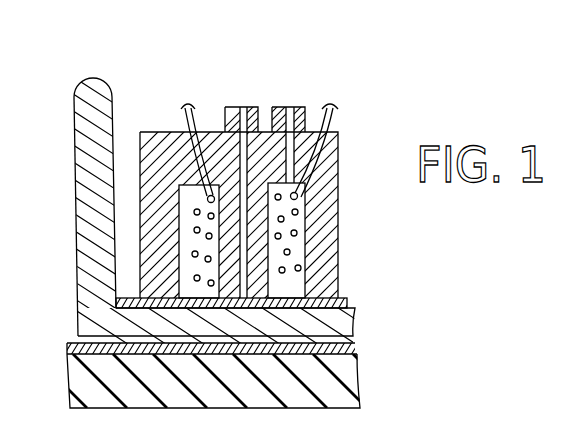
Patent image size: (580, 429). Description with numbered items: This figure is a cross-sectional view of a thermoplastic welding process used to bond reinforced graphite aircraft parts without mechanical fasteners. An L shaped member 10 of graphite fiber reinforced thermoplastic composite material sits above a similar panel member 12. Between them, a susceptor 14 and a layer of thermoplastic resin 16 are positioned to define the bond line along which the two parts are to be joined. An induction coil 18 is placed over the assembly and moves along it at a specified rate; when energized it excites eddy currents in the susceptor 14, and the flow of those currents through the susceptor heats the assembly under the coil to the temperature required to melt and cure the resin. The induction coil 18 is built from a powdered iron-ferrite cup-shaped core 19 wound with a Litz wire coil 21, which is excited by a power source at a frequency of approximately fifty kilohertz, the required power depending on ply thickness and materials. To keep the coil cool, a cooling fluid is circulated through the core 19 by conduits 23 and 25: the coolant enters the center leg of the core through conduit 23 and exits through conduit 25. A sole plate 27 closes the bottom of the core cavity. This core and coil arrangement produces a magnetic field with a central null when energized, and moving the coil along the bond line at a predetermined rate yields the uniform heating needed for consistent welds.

The L shaped member 10 is at (113, 83).
The panel member 12 is at (353, 385).
The susceptor 14 is at (355, 343).
The layer of thermoplastic resin 16 is at (76, 342).
The induction coil 18 is at (359, 223).
The cup-shaped core 19 is at (268, 290).
The Litz wire coil 21 is at (322, 201).
The conduit 23 is at (256, 107).
The conduit 25 is at (304, 107).
The sole plate 27 is at (79, 259).